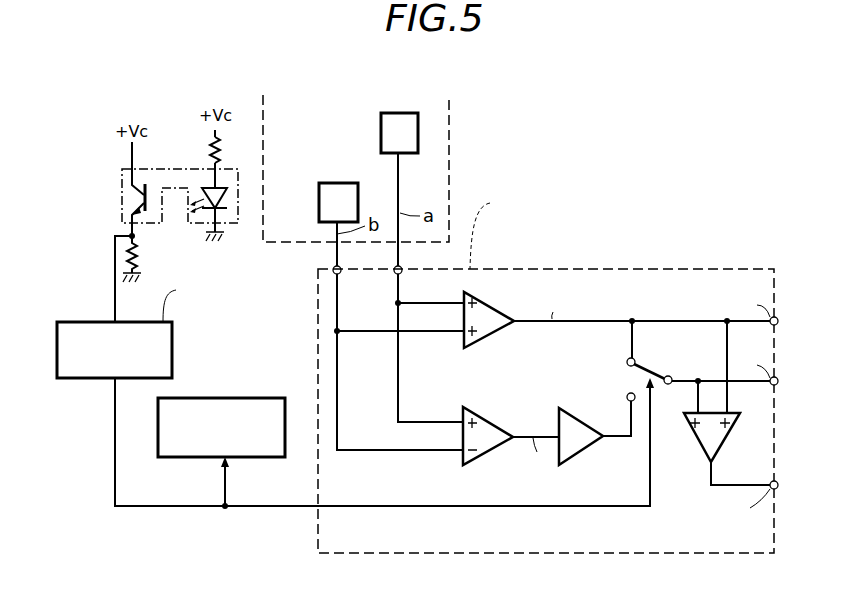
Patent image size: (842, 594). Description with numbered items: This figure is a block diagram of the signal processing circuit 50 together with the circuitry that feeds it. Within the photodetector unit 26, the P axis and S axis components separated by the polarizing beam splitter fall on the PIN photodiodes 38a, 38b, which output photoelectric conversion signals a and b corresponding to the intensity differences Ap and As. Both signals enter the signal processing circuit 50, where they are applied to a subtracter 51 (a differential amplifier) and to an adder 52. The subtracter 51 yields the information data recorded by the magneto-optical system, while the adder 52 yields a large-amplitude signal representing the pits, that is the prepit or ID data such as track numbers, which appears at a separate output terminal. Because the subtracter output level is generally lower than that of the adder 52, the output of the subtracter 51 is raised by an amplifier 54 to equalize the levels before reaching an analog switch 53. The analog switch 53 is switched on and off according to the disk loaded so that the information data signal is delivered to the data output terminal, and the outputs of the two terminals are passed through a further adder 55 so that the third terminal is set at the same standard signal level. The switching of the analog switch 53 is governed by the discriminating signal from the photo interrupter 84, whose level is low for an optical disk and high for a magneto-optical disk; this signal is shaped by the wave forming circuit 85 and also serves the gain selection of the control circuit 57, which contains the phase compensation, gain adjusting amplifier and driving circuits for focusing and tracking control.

The photo interrupter 84 is at (167, 223).
The wave forming circuit 85 is at (172, 340).
The control circuit 57 is at (273, 458).
The photodetector unit 26 is at (449, 190).
The PIN photodiode 38a is at (400, 112).
The PIN photodiode 38b is at (337, 183).
The signal processing circuit 50 is at (512, 268).
The subtracter 51 is at (462, 454).
The adder 52 is at (498, 334).
The analog switch 53 is at (627, 372).
The amplifier 54 is at (583, 447).
The adder 55 is at (733, 430).